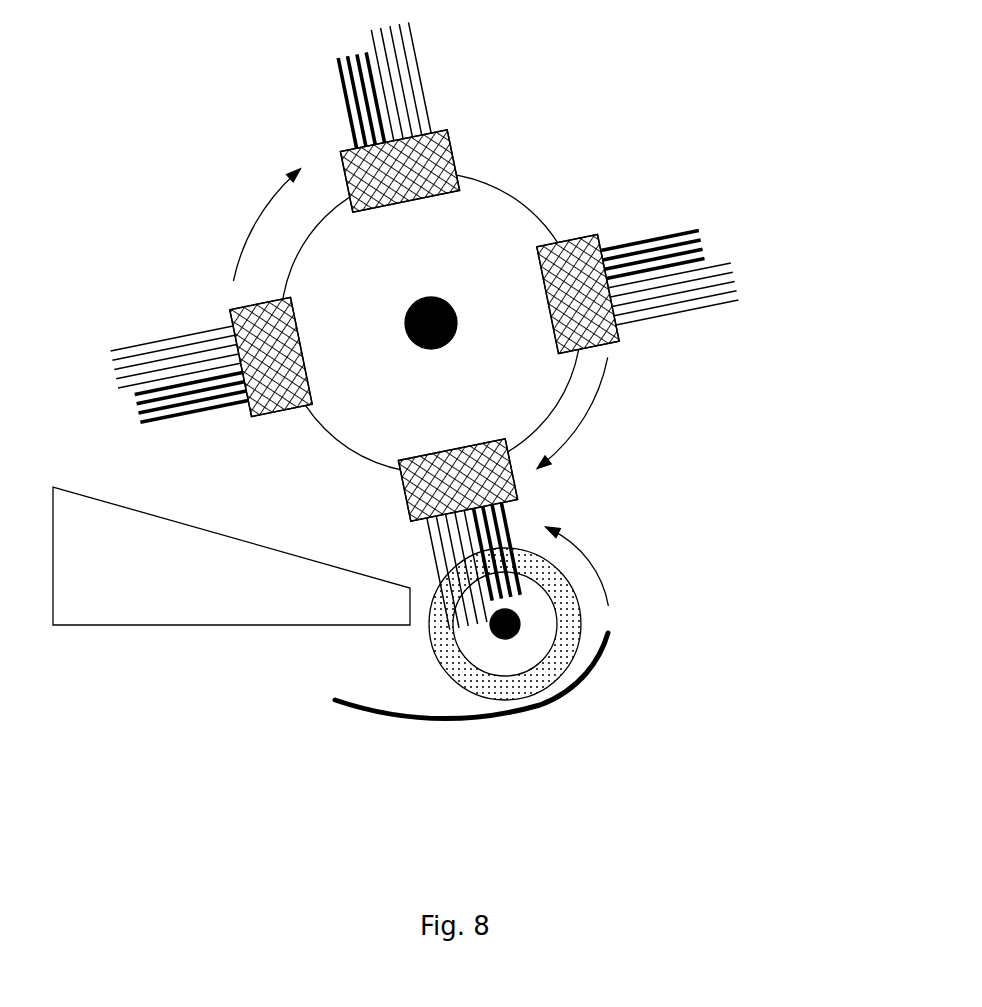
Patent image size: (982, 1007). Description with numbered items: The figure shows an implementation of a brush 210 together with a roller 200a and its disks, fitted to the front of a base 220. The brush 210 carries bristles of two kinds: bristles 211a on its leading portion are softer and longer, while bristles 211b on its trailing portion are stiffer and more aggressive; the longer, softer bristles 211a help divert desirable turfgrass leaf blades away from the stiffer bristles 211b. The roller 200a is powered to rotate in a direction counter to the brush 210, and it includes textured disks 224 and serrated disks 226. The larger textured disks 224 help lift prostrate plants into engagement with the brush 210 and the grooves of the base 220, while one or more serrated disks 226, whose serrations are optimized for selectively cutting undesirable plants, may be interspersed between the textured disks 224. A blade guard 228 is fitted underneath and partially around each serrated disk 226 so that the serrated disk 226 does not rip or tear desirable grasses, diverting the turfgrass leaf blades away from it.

The brush 210 is at (502, 188).
The bristles 211a is at (733, 280).
The bristles 211b is at (680, 232).
The base 220 is at (210, 626).
The textured disks 224 is at (552, 678).
The serrated disks 226 is at (558, 627).
The blade guard 228 is at (495, 723).
The roller 200a is at (447, 672).